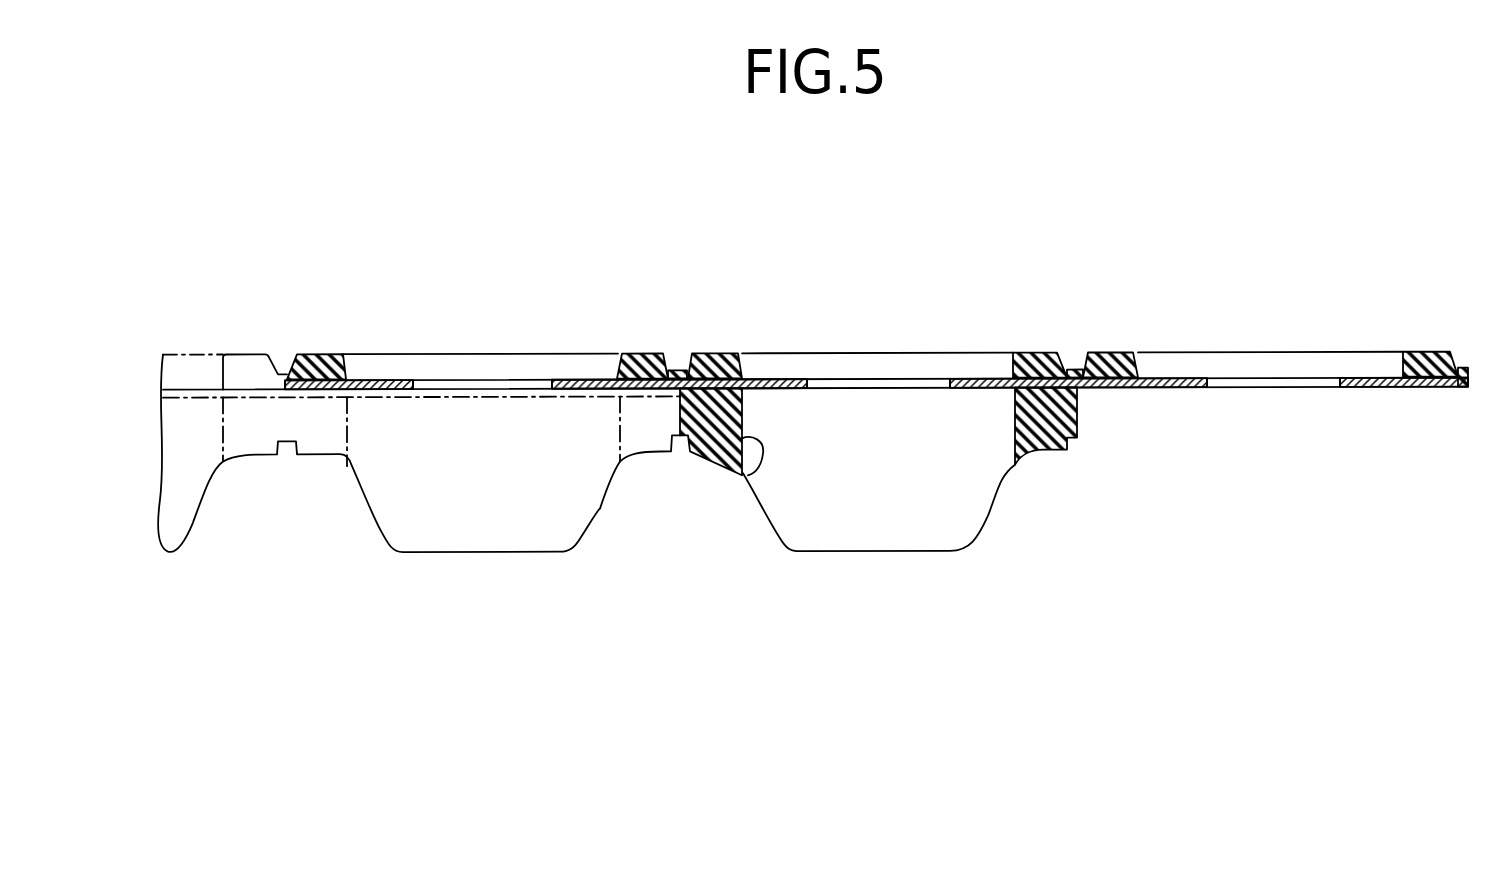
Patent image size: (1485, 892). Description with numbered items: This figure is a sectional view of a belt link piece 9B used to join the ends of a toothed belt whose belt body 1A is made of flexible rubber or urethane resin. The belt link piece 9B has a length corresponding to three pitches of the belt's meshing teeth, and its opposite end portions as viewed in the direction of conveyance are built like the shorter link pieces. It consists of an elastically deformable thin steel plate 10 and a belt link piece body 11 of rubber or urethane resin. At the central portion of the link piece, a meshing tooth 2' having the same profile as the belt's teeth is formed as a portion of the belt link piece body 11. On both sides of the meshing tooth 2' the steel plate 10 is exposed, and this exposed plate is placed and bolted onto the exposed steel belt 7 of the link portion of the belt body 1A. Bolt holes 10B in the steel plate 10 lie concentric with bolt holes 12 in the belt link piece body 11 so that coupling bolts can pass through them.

The belt body 1A is at (343, 504).
The meshing tooth 2' is at (863, 534).
The steel belt 7 is at (243, 390).
The belt link piece 9B is at (929, 322).
The steel plate 10 is at (782, 381).
The bolt holes 10B is at (822, 381).
The belt link piece body 11 is at (1045, 355).
The bolt holes 12 is at (617, 366).